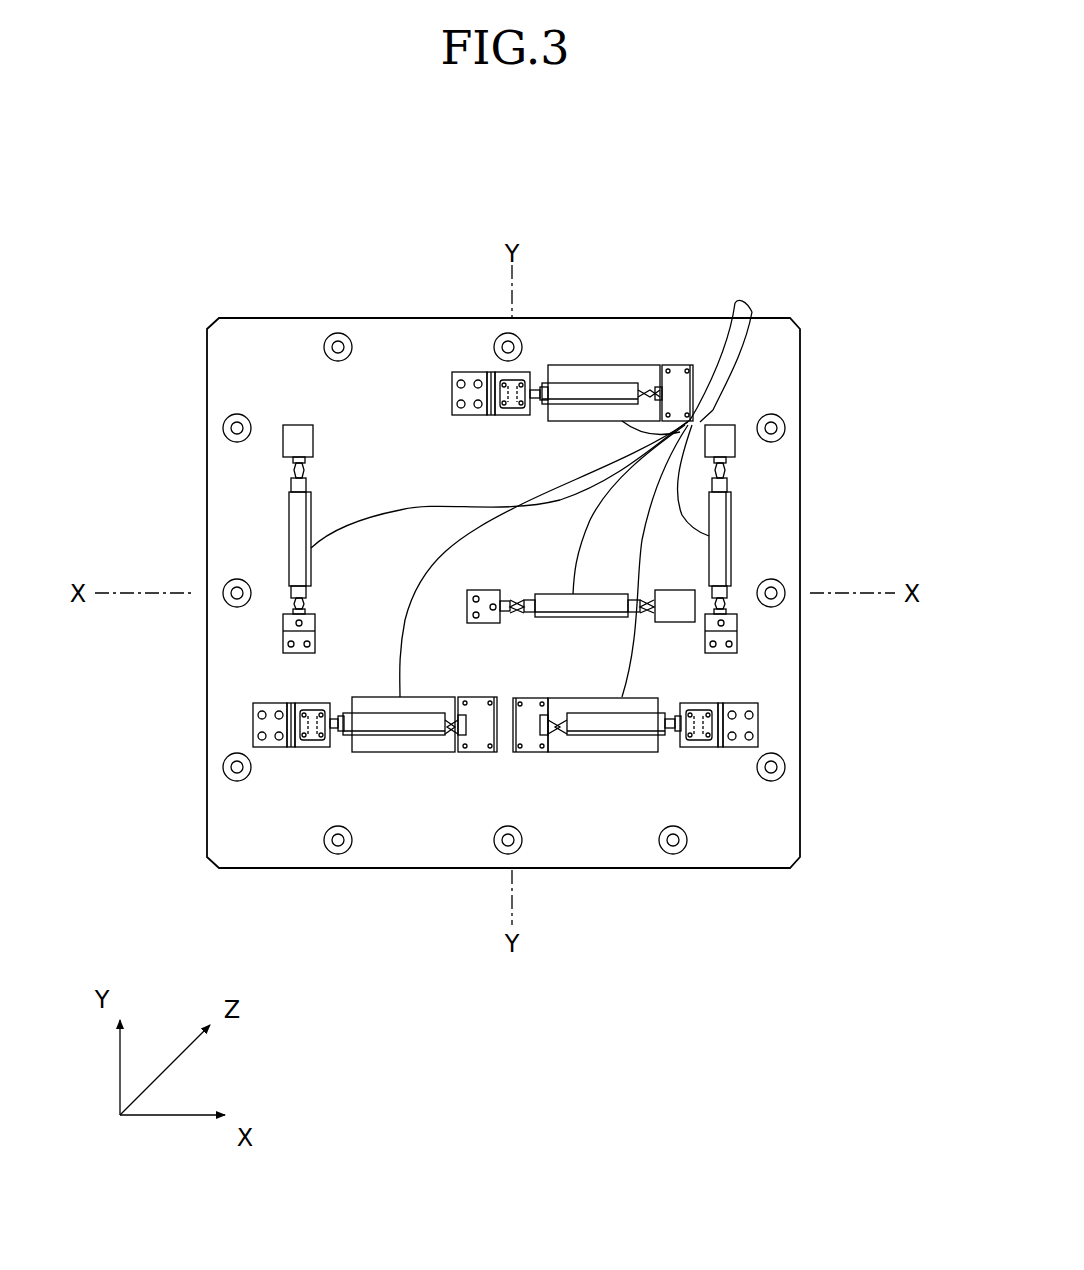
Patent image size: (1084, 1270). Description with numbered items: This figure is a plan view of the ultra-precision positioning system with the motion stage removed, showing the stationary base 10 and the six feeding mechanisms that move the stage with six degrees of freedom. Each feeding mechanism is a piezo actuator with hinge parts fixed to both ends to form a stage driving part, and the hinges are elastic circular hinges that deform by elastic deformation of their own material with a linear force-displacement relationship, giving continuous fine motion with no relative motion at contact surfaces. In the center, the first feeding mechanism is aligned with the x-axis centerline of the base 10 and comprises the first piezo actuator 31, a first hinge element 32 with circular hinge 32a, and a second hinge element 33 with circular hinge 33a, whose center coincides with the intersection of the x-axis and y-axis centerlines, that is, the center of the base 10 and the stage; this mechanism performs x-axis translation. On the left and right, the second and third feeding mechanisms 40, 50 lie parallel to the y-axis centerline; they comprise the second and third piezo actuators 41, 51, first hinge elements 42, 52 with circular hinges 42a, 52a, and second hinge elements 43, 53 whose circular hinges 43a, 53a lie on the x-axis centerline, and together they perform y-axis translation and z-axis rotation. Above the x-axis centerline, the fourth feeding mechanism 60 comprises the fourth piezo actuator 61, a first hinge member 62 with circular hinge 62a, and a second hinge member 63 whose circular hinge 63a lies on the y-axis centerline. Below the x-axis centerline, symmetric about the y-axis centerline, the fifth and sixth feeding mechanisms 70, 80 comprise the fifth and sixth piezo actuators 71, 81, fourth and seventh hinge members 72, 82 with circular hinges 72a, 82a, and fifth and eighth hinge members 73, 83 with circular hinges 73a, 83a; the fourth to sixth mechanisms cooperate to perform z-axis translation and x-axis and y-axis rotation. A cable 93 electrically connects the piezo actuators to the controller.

The base 10 is at (260, 340).
The first piezo actuator 31 is at (603, 603).
The first hinge element 32 is at (634, 620).
The circular hinge 32a is at (653, 620).
The second hinge element 33 is at (527, 618).
The circular hinge 33a is at (510, 615).
The second feeding mechanism 40 is at (203, 564).
The second piezo actuator 41 is at (300, 570).
The first hinge element 42 is at (300, 487).
The circular hinge 42a is at (293, 460).
The second hinge element 43 is at (290, 594).
The circular hinge 43a is at (292, 605).
The third feeding mechanism 50 is at (798, 555).
The third piezo actuator 51 is at (732, 545).
The first hinge element 52 is at (728, 488).
The circular hinge 52a is at (725, 462).
The second hinge element 53 is at (733, 598).
The circular hinge 53a is at (730, 612).
The fourth feeding mechanism 60 is at (609, 336).
The fourth piezo actuator 61 is at (622, 382).
The first hinge member 62 is at (660, 376).
The circular hinge 62a is at (697, 405).
The second hinge member 63 is at (538, 370).
The circular hinge 63a is at (512, 405).
The fifth feeding mechanism 70 is at (430, 782).
The fifth piezo actuator 71 is at (406, 752).
The fourth hinge member 72 is at (450, 740).
The circular hinge 72a is at (447, 697).
The fifth hinge member 73 is at (343, 745).
The circular hinge 73a is at (316, 748).
The sixth feeding mechanism 80 is at (640, 813).
The sixth piezo actuator 81 is at (598, 745).
The seventh hinge member 82 is at (565, 745).
The circular hinge 82a is at (556, 745).
The eighth hinge member 83 is at (670, 748).
The circular hinge 83a is at (705, 748).
The cable 93 is at (737, 340).